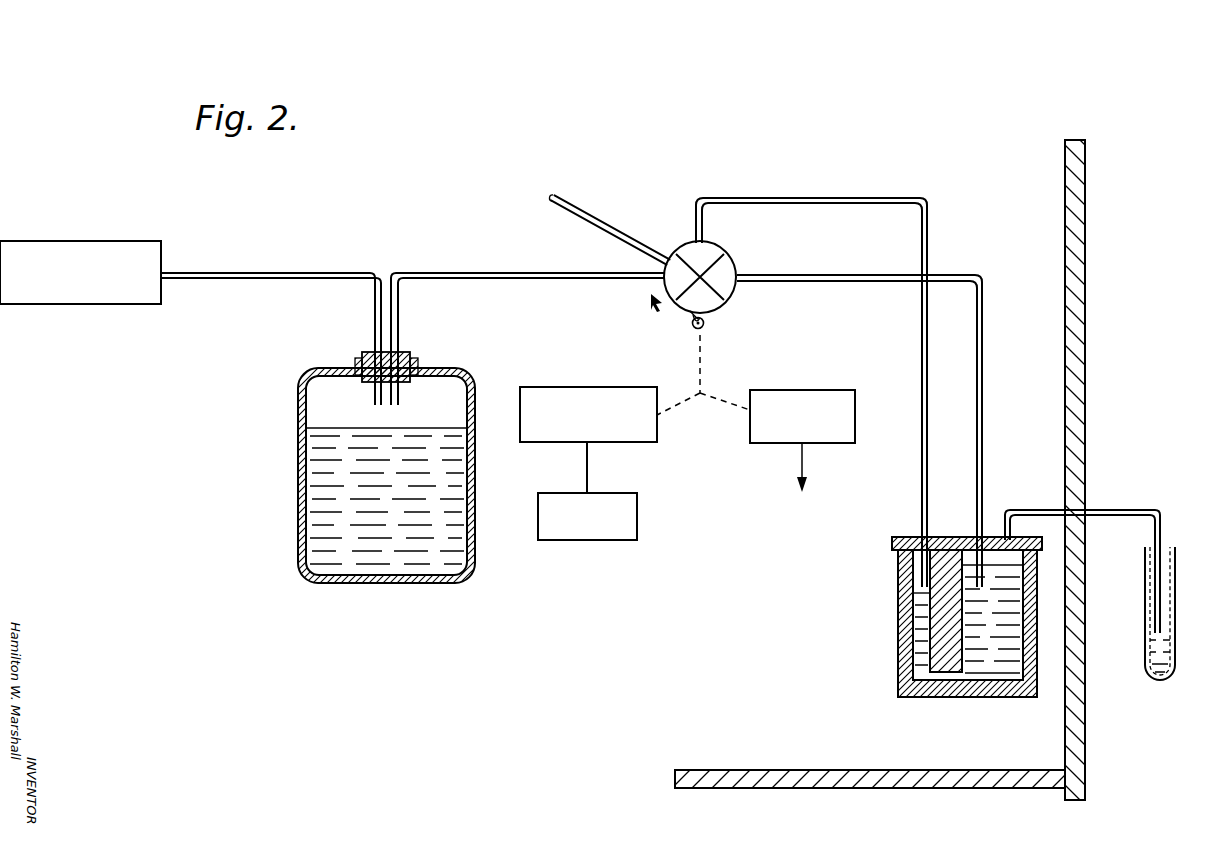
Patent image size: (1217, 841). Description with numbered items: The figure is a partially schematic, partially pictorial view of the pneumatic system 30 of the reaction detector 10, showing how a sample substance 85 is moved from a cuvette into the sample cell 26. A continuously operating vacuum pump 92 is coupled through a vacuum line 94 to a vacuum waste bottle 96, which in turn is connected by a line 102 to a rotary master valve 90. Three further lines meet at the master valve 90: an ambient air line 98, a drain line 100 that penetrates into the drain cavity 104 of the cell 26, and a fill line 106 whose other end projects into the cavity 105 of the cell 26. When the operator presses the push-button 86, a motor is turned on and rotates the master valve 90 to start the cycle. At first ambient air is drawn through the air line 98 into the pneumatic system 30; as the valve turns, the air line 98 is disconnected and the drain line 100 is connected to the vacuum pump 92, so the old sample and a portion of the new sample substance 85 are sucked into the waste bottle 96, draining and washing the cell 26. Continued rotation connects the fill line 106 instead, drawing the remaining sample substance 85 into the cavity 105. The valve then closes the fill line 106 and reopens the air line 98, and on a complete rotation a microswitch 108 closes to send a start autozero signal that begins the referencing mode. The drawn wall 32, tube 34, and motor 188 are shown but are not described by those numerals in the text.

The detector 10 is at (715, 724).
The sample cell 26 is at (927, 690).
The pneumatic system 30 is at (1135, 505).
The wall 32 is at (1087, 730).
The test tube 34 is at (1147, 662).
The sample substance 85 is at (1170, 640).
The push-button 86 is at (563, 384).
The master valve 90 is at (735, 293).
The vacuum pump 92 is at (55, 237).
The vacuum line 94 is at (258, 271).
The vacuum waste bottle 96 is at (300, 498).
The ambient air line 98 is at (615, 228).
The drain line 100 is at (897, 197).
The line 102 is at (516, 281).
The drain cavity 104 is at (913, 645).
The cavity 105 is at (998, 658).
The fill line 106 is at (868, 277).
The microswitch 108 is at (823, 387).
The motor 188 is at (637, 530).